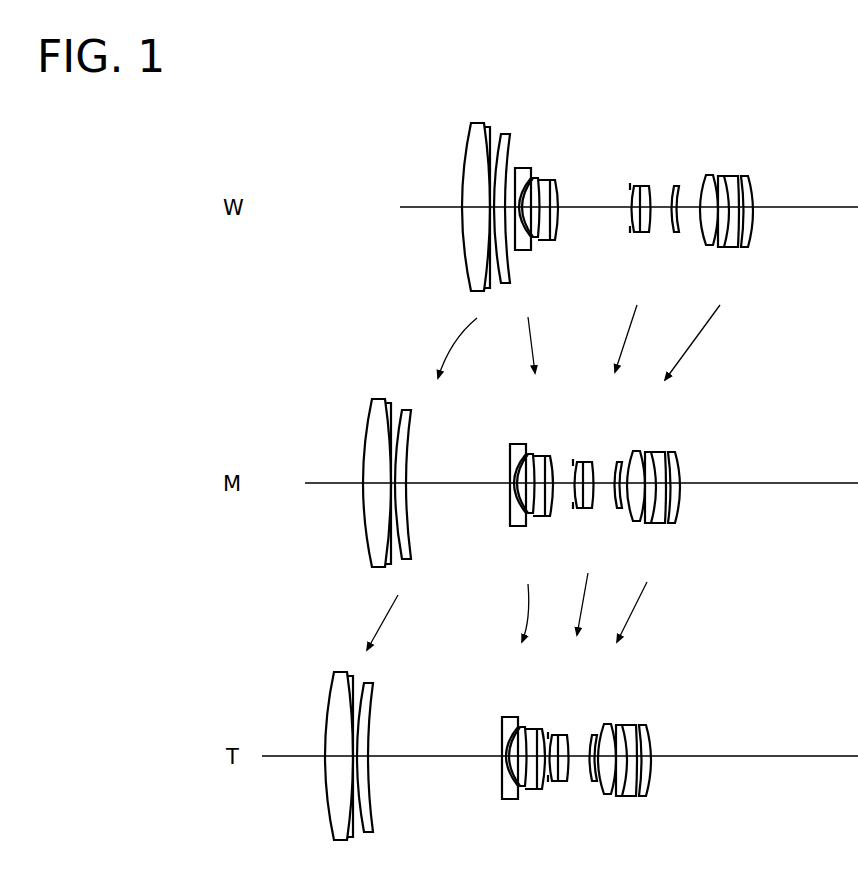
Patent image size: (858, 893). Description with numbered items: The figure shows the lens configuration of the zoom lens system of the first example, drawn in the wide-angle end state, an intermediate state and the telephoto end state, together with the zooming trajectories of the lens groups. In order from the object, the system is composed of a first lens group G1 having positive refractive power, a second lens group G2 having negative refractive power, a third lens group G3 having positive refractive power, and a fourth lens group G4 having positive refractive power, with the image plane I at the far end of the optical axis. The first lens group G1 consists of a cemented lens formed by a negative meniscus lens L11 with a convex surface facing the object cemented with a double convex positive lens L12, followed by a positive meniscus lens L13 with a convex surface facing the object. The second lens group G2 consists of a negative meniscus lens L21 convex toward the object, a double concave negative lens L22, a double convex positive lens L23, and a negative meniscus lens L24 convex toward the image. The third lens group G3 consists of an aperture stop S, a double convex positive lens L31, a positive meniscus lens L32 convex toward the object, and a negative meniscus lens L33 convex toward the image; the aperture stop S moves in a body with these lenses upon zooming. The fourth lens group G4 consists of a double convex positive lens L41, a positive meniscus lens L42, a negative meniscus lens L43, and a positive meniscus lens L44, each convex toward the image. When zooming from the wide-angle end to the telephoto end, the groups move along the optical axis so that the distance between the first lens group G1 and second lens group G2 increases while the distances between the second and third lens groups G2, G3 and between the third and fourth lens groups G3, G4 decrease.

The first lens group G1 is at (464, 192).
The second lens group G2 is at (556, 169).
The third lens group G3 is at (643, 185).
The fourth lens group G4 is at (751, 195).
The negative meniscus lens L11 is at (472, 122).
The double convex positive lens L12 is at (485, 125).
The positive meniscus lens L13 is at (510, 133).
The negative meniscus lens L21 is at (520, 167).
The double concave negative lens L22 is at (535, 177).
The double convex positive lens L23 is at (545, 178).
The negative meniscus lens L24 is at (552, 178).
The aperture stop S is at (630, 186).
The double convex positive lens L31 is at (637, 186).
The positive meniscus lens L32 is at (643, 186).
The negative meniscus lens L33 is at (673, 186).
The double convex positive lens L41 is at (710, 173).
The positive meniscus lens L42 is at (720, 175).
The negative meniscus lens L43 is at (728, 175).
The positive meniscus lens L44 is at (741, 175).
The image plane I is at (857, 177).